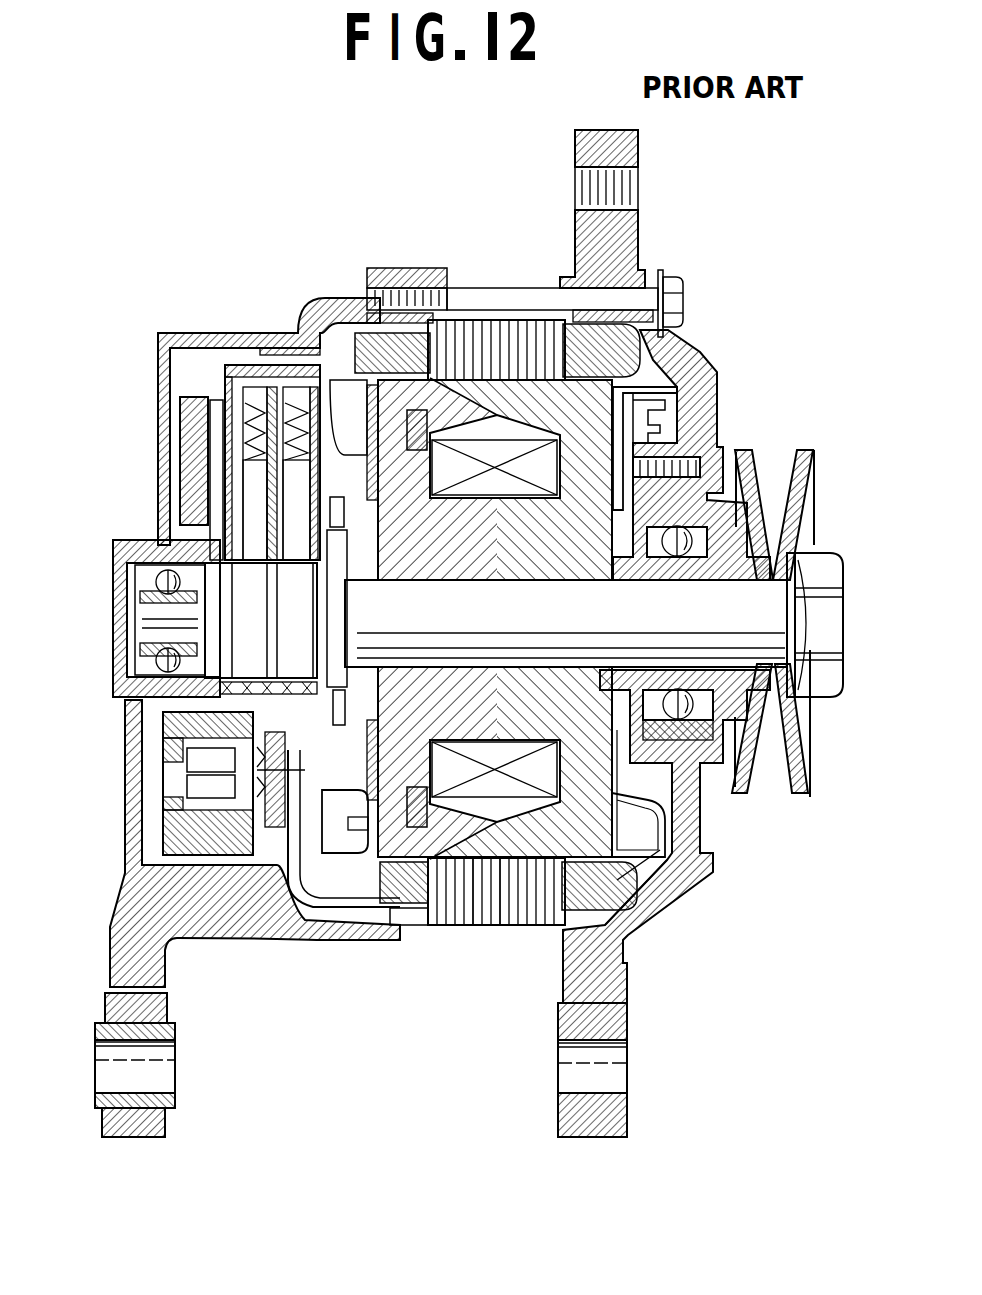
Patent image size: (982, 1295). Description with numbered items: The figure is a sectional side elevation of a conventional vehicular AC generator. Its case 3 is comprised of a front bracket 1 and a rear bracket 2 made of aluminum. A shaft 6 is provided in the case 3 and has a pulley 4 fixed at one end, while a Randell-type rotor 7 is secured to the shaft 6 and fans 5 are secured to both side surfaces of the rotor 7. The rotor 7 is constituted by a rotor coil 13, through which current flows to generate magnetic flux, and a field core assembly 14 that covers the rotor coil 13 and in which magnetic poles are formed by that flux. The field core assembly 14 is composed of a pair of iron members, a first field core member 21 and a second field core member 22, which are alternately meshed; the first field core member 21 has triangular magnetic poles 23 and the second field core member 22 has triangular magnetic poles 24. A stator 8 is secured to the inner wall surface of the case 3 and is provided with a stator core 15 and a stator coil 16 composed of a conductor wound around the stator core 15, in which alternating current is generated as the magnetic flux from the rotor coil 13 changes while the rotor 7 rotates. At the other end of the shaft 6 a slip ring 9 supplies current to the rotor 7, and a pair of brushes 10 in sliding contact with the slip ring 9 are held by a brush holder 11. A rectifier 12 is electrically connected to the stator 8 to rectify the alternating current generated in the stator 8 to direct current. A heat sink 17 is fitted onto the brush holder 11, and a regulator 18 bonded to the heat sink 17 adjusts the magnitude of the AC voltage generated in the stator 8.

The front bracket 1 is at (680, 898).
The rear bracket 2 is at (232, 928).
The case 3 is at (313, 290).
The pulley 4 is at (813, 462).
The fans 5 is at (680, 848).
The shaft 6 is at (700, 777).
The Randell-type rotor 7 is at (625, 362).
The stator 8 is at (490, 910).
The slip ring 9 is at (248, 648).
The brushes 10 is at (250, 490).
The brush holder 11 is at (215, 518).
The rectifier 12 is at (165, 780).
The rotor coil 13 is at (440, 940).
The field core assembly 14 is at (510, 910).
The stator core 15 is at (487, 340).
The stator coil 16 is at (612, 345).
The heat sink 17 is at (180, 420).
The regulator 18 is at (212, 405).
The first field core member 21 is at (650, 850).
The second field core member 22 is at (300, 840).
The triangular magnetic poles 23 is at (520, 400).
The triangular magnetic poles 24 is at (470, 395).